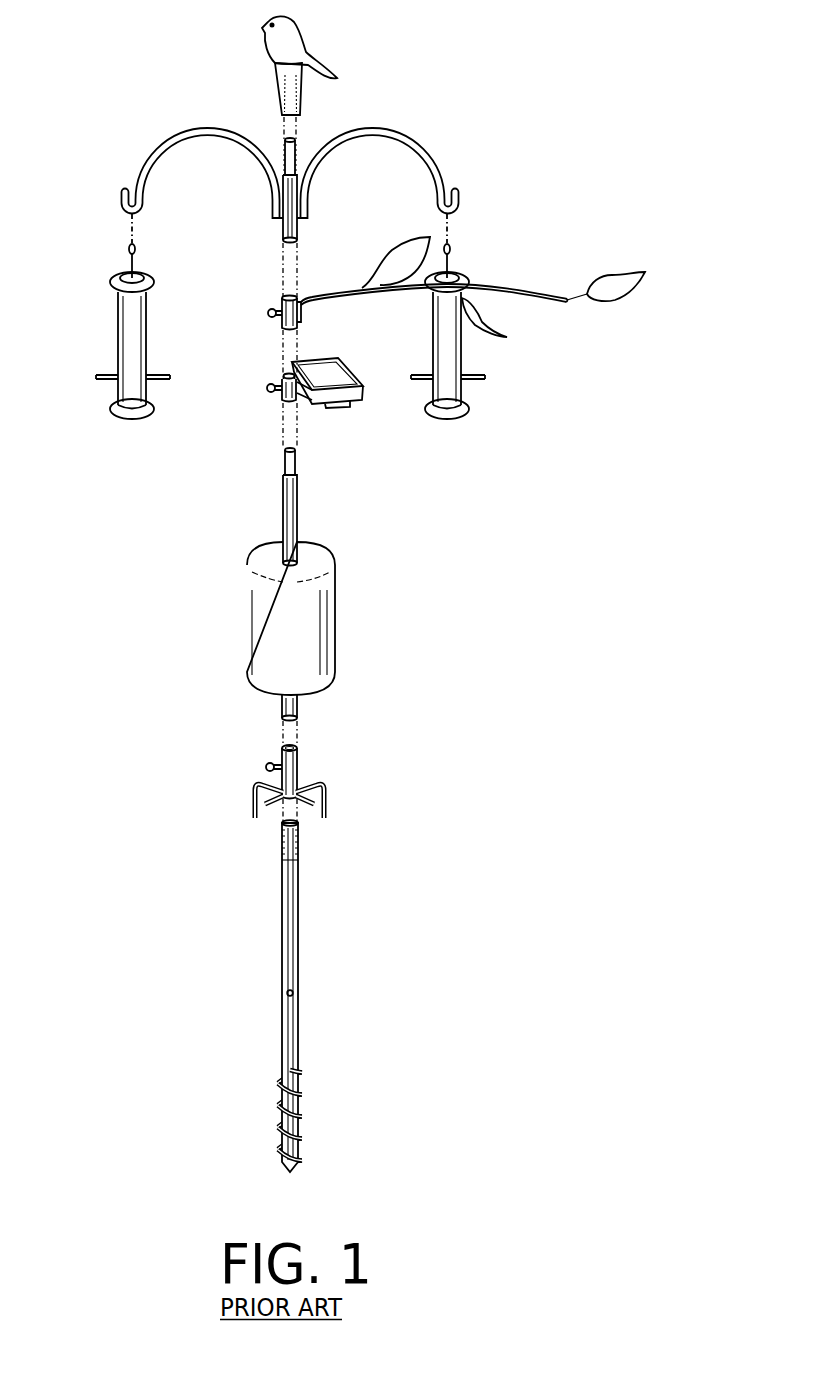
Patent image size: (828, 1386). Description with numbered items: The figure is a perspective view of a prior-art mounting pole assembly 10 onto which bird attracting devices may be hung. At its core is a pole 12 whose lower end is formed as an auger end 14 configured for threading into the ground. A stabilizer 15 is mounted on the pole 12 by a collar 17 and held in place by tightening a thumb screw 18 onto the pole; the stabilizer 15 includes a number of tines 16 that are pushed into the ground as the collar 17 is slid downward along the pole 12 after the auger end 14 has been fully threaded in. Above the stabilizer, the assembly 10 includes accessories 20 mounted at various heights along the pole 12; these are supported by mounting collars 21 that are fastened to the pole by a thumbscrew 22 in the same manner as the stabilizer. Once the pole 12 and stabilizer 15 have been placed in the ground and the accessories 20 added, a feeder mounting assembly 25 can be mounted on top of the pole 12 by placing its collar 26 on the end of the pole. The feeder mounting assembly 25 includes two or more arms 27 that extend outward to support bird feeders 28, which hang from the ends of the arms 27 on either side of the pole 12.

The mounting pole assembly 10 is at (400, 738).
The pole 12 is at (297, 958).
The auger end 14 is at (302, 1123).
The stabilizer 15 is at (297, 768).
The tines 16 is at (252, 813).
The collar 17 is at (282, 755).
The thumb screw 18 is at (266, 767).
The accessories 20 is at (495, 292).
The mounting collars 21 is at (282, 310).
The thumbscrew 22 is at (287, 383).
The feeder mounting assembly 25 is at (287, 127).
The collar 26 is at (287, 230).
The arms 27 is at (423, 150).
The bird feeders 28 is at (443, 355).